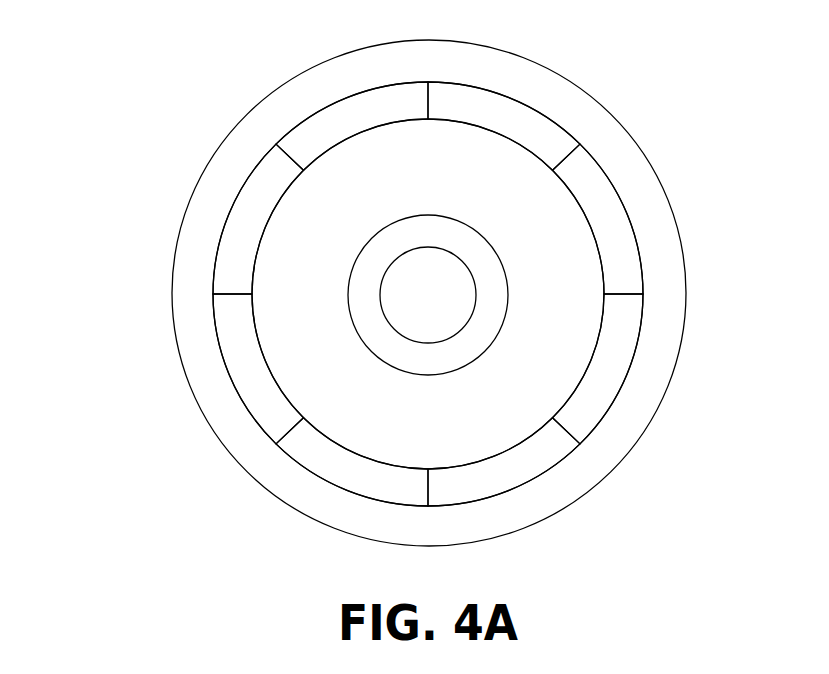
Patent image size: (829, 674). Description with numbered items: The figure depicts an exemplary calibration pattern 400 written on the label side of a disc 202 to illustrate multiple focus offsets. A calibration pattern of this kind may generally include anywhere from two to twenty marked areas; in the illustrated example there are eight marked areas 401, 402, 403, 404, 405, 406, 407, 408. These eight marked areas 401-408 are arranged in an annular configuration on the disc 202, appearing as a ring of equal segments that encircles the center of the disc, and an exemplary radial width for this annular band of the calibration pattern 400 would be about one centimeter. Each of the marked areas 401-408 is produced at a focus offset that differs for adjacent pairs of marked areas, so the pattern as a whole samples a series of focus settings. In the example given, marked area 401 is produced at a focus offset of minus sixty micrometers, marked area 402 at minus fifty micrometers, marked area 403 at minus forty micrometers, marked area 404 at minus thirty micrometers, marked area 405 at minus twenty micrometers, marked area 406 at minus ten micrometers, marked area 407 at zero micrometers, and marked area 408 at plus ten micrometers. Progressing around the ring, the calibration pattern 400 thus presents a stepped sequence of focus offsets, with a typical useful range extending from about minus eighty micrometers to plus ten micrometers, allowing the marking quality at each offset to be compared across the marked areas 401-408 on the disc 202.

The disc 202 is at (112, 117).
The calibration pattern 400 is at (461, 130).
The marked area 401 is at (522, 128).
The marked area 402 is at (606, 230).
The marked area 403 is at (617, 362).
The marked area 404 is at (507, 480).
The marked area 405 is at (360, 473).
The marked area 406 is at (243, 355).
The marked area 407 is at (248, 242).
The marked area 408 is at (352, 117).